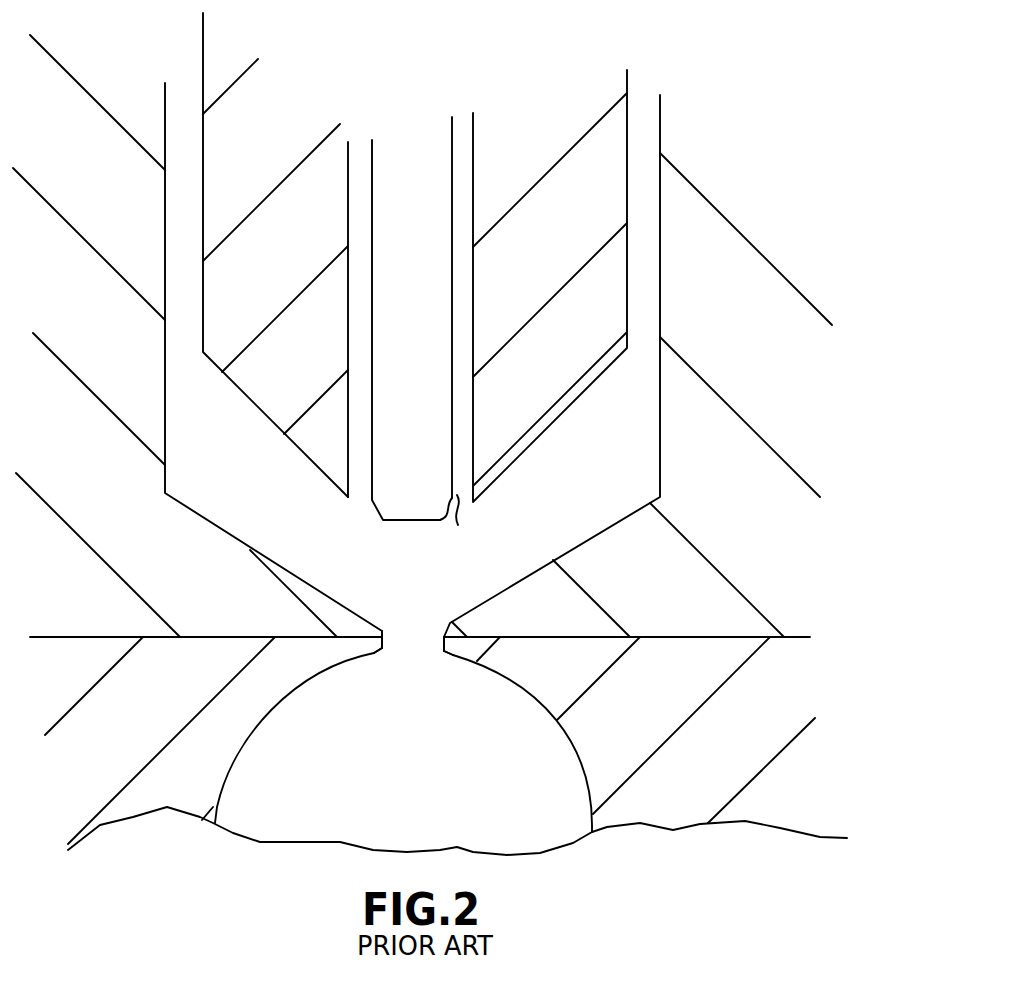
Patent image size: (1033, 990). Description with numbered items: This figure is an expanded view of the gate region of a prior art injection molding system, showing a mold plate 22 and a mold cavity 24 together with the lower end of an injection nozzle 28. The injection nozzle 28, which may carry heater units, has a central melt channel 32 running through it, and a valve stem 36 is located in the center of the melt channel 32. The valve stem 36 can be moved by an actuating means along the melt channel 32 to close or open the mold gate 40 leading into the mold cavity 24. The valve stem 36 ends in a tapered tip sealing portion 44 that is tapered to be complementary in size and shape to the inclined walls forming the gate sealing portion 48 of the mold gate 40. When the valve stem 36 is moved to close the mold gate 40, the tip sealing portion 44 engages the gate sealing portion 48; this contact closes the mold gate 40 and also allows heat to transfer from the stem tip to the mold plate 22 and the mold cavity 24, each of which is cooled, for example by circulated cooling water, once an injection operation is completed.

The mold plate 22 is at (787, 377).
The mold cavity 24 is at (808, 762).
The injection nozzle 28 is at (513, 430).
The central melt channel 32 is at (357, 494).
The valve stem 36 is at (435, 277).
The mold gate 40 is at (433, 643).
The tapered tip sealing portion 44 is at (467, 517).
The gate sealing portion 48 is at (378, 628).